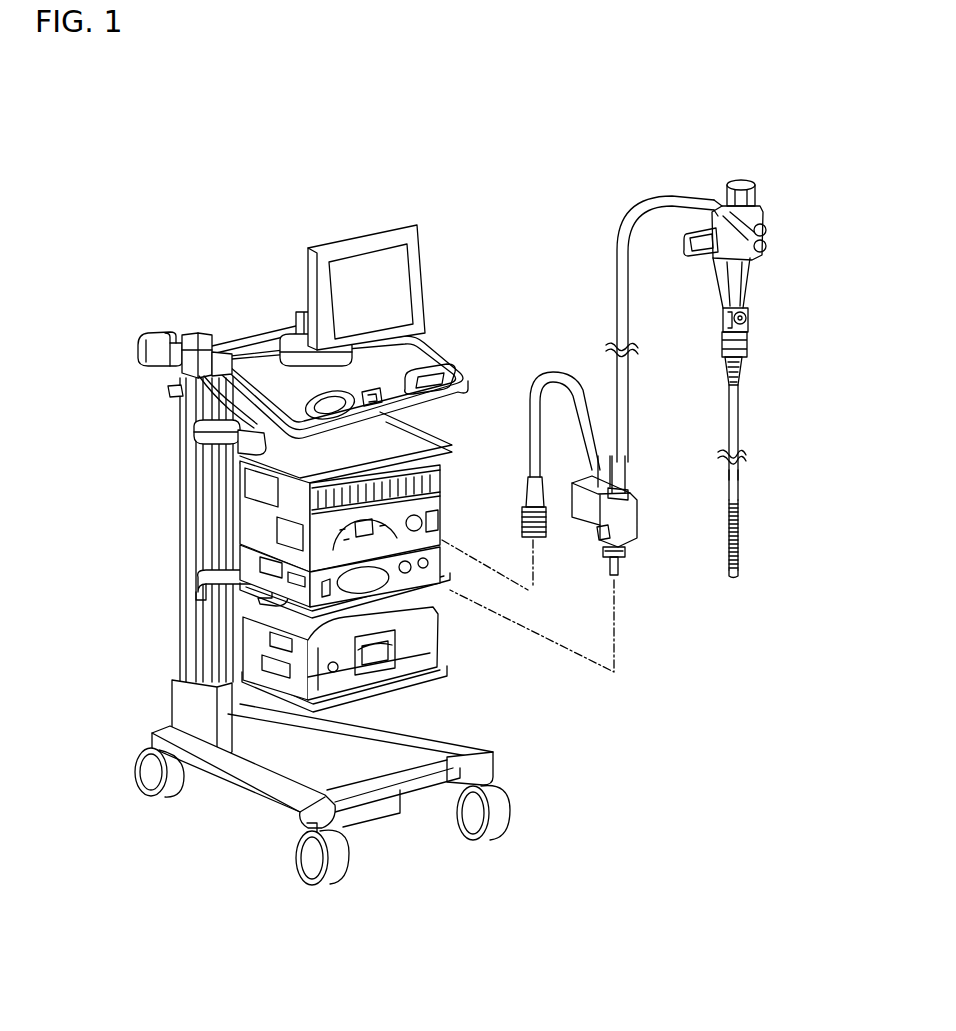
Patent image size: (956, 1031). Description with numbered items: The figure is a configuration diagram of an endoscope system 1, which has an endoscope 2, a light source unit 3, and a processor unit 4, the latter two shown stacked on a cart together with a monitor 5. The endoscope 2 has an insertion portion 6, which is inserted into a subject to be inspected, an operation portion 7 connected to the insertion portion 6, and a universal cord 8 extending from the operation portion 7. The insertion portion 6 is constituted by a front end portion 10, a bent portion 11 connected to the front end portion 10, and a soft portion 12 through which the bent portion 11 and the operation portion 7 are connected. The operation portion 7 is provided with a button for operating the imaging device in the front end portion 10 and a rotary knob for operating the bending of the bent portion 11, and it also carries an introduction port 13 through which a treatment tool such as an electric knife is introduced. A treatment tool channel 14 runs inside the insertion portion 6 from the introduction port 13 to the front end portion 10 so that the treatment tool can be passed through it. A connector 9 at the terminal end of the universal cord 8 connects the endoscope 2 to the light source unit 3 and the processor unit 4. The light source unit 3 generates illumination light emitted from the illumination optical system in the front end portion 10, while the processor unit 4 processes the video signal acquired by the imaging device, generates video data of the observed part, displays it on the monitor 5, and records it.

The endoscope system 1 is at (204, 144).
The endoscope 2 is at (646, 185).
The light source unit 3 is at (265, 564).
The processor unit 4 is at (265, 521).
The monitor 5 is at (372, 268).
The insertion portion 6 is at (738, 473).
The operation portion 7 is at (770, 205).
The universal cord 8 is at (617, 290).
The connector 9 is at (532, 492).
The front end portion 10 is at (739, 569).
The bent portion 11 is at (739, 513).
The soft portion 12 is at (727, 416).
The introduction port 13 is at (748, 318).
The treatment tool channel 14 is at (742, 370).